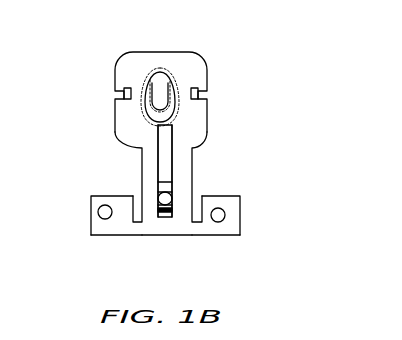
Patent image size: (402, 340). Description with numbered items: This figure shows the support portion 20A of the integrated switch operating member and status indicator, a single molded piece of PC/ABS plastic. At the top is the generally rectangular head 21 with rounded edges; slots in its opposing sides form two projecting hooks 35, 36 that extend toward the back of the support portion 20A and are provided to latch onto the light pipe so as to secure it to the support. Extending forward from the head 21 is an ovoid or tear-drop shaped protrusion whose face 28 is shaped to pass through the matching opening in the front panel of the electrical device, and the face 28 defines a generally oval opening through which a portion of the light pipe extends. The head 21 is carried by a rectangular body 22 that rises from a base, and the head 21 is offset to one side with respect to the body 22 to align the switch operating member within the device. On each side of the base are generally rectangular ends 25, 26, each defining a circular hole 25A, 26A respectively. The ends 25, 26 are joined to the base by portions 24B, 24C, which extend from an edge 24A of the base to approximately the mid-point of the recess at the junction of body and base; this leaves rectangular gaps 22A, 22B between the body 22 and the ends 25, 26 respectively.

The support portion 20A is at (239, 33).
The head 21 is at (204, 130).
The body 22 is at (189, 170).
The rectangular gap 22A is at (141, 200).
The rectangular gap 22B is at (193, 203).
The edge of the base 24A is at (150, 235).
The portion 24B is at (139, 234).
The portion 24C is at (194, 235).
The end 25 is at (104, 228).
The circular hole 25A is at (103, 210).
The end 26 is at (239, 235).
The circular hole 26A is at (221, 216).
The face 28 is at (150, 107).
The projecting hook 35 is at (124, 95).
The projecting hook 36 is at (199, 90).